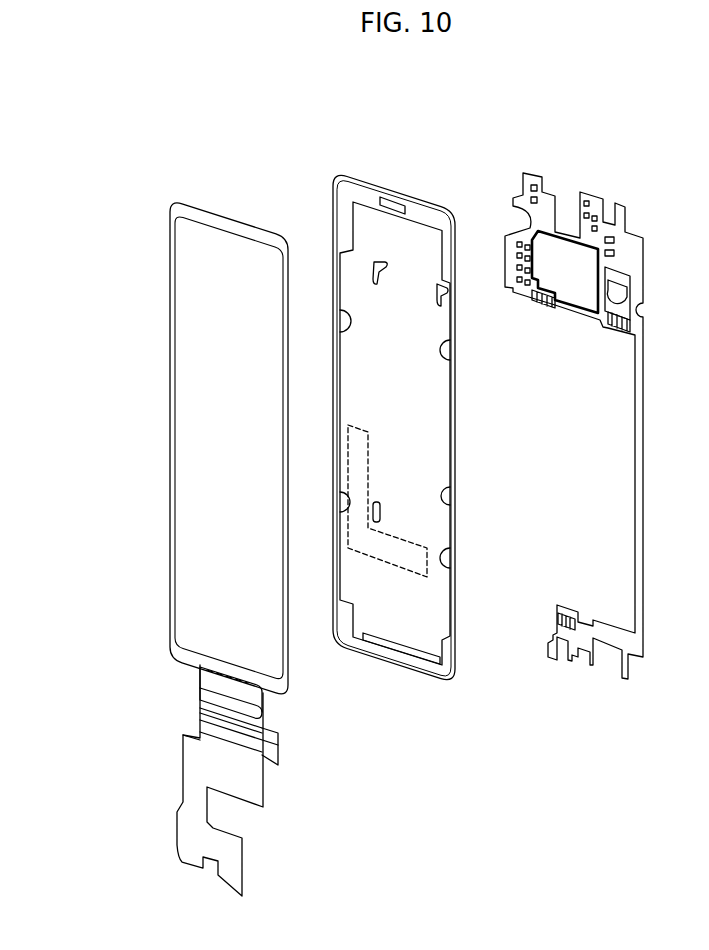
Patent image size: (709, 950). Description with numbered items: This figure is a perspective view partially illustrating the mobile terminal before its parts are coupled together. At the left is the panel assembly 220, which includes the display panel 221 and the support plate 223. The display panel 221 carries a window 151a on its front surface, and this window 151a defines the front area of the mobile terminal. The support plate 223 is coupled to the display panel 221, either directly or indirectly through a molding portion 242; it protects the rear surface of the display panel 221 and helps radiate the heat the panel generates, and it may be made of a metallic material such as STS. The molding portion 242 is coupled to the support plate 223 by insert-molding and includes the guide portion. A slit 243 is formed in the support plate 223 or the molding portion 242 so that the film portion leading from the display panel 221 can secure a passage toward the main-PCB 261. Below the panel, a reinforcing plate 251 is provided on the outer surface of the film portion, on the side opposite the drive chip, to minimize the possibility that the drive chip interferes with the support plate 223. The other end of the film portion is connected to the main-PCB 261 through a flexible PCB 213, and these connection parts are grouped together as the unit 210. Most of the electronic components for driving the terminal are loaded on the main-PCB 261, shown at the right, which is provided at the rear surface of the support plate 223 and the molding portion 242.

The window 151a is at (186, 207).
The panel assembly 220 is at (95, 383).
The display panel 221 is at (190, 382).
The support plate 223 is at (372, 414).
The molding portion 242 is at (405, 212).
The slit 243 is at (207, 713).
The circuit unit 210 is at (120, 693).
The reinforcing plate 251 is at (215, 690).
The flexible PCB 213 is at (212, 757).
The main-PCB 261 is at (647, 215).